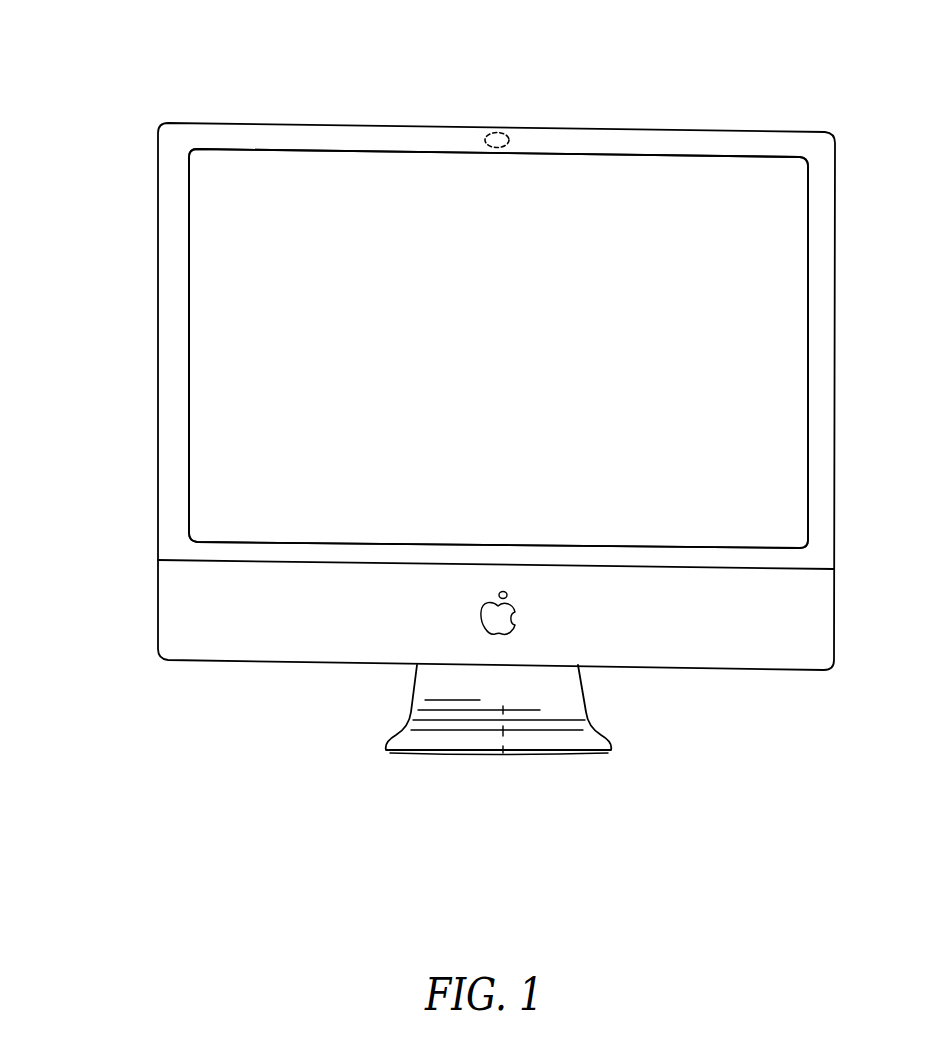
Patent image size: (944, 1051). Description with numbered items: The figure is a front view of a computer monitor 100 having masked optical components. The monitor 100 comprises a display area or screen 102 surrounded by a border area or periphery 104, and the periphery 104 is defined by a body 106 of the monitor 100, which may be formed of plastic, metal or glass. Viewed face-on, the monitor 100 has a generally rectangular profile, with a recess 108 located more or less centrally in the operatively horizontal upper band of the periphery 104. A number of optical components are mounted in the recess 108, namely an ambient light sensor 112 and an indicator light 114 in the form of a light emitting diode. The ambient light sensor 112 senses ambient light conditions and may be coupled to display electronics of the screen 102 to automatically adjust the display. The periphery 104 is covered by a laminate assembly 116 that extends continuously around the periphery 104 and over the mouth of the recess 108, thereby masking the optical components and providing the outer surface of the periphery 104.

The monitor 100 is at (692, 52).
The screen 102 is at (220, 248).
The periphery 104 is at (173, 388).
The body 106 is at (780, 623).
The recess 108 is at (470, 133).
The ambient light sensor 112 is at (421, 103).
The indicator light 114 is at (442, 103).
The laminate assembly 116 is at (601, 148).